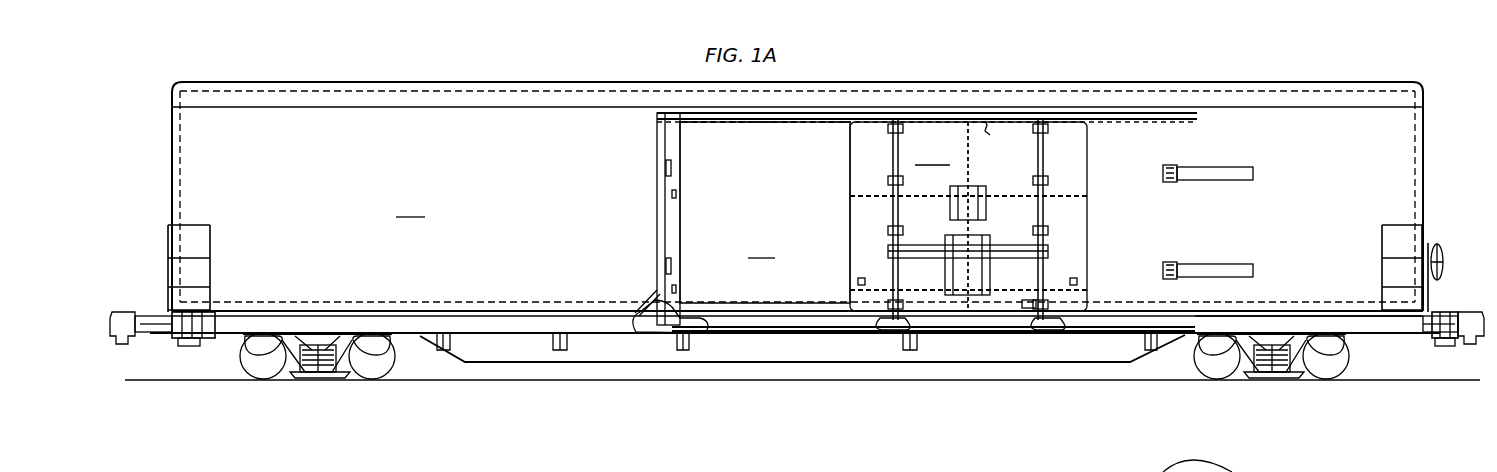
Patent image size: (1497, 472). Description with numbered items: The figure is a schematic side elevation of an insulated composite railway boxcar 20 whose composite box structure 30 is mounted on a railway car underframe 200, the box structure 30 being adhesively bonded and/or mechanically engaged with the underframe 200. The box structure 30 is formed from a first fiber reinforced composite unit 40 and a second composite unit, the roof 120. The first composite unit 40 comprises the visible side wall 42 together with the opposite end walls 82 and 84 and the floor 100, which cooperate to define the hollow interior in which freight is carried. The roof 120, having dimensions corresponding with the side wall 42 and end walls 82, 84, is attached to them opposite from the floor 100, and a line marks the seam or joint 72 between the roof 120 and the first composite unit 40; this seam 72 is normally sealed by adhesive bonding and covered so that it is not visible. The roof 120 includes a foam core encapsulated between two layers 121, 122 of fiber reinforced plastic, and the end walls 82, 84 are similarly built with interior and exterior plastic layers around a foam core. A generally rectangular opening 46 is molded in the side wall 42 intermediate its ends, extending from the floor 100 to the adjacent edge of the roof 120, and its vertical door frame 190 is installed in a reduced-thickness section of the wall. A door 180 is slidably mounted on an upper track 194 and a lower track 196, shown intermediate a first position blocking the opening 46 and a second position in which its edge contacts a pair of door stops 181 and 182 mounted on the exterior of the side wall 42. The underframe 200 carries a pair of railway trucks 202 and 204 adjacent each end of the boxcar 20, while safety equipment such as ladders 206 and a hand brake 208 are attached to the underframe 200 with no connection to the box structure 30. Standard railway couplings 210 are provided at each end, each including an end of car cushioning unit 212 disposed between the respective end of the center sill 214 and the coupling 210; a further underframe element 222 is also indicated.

The insulated composite railway boxcar 20 is at (797, 228).
The composite box structure 30 is at (1288, 72).
The first fiber reinforced composite unit 40 is at (797, 175).
The side wall 42 is at (354, 128).
The opening 46 is at (765, 212).
The seam or joint 72 is at (420, 109).
The end wall 82 is at (1417, 198).
The end wall 84 is at (172, 198).
The floor 100 is at (795, 335).
The roof 120 is at (797, 94).
The layer of fiber reinforced plastic 121 is at (510, 93).
The layer of fiber reinforced plastic 122 is at (510, 83).
The door 180 is at (968, 224).
The door stop 181 is at (1211, 168).
The door stop 182 is at (1213, 261).
The door frame 190 is at (680, 218).
The upper track 194 is at (1140, 114).
The lower track 196 is at (1085, 333).
The railway car underframe 200 is at (993, 370).
The railway truck 202 is at (311, 377).
The railway truck 204 is at (1276, 377).
The ladder 206 is at (212, 246).
The hand brake 208 is at (1441, 256).
The railway coupling 210 is at (130, 313).
The end of car cushioning unit 212 is at (152, 334).
The center sill 214 is at (525, 364).
The side sill 222 is at (1365, 326).